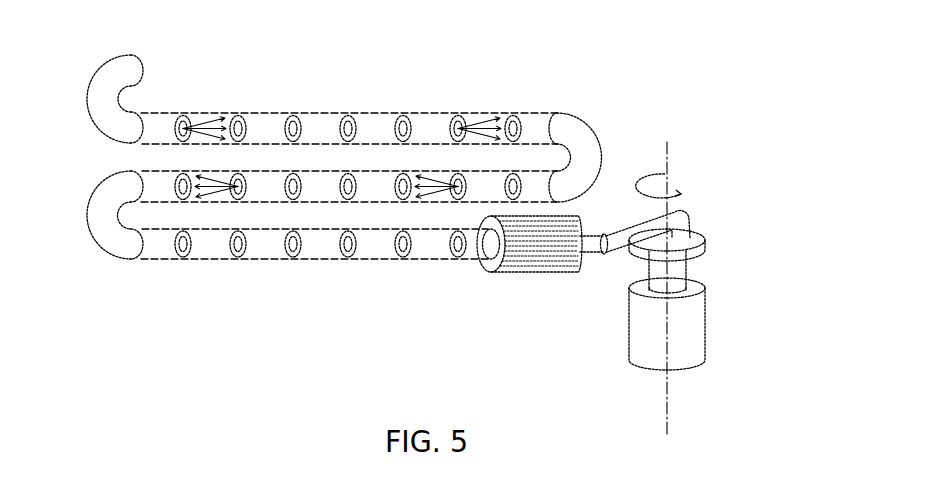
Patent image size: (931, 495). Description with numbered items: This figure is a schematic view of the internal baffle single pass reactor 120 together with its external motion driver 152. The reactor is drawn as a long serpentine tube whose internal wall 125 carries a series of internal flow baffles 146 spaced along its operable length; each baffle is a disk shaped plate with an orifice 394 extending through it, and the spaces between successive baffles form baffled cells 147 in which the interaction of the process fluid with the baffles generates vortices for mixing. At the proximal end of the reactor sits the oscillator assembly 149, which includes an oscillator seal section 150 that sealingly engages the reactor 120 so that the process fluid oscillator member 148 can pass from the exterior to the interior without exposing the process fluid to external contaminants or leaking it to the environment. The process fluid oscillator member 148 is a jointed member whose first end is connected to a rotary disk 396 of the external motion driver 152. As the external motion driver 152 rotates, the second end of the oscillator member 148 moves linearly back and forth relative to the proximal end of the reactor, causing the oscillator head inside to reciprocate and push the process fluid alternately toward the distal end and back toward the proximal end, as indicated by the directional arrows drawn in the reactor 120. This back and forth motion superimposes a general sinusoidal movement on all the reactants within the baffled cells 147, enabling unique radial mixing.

The internal baffle single pass reactor 120 is at (313, 261).
The internal wall 125 is at (267, 121).
The baffled cells 147 is at (378, 124).
The orifice 394 is at (292, 246).
The internal flow baffles 146 is at (457, 262).
The oscillator seal section 150 is at (528, 272).
The process fluid oscillator member 148 is at (593, 253).
The rotary disk 396 is at (696, 236).
The external motion driver 152 is at (695, 327).
The oscillator assembly 149 is at (698, 202).